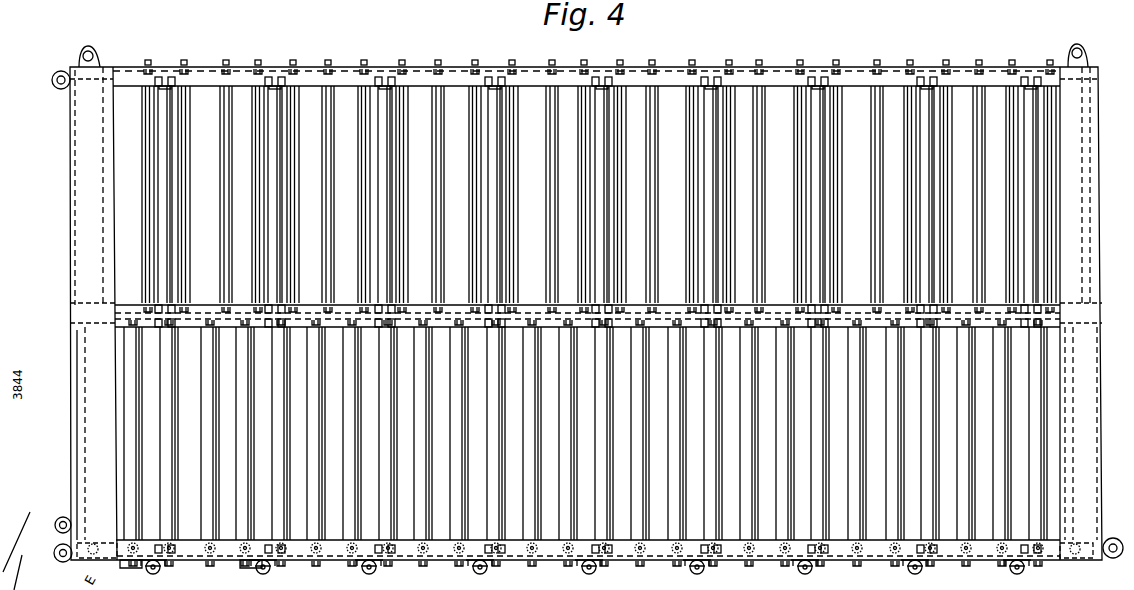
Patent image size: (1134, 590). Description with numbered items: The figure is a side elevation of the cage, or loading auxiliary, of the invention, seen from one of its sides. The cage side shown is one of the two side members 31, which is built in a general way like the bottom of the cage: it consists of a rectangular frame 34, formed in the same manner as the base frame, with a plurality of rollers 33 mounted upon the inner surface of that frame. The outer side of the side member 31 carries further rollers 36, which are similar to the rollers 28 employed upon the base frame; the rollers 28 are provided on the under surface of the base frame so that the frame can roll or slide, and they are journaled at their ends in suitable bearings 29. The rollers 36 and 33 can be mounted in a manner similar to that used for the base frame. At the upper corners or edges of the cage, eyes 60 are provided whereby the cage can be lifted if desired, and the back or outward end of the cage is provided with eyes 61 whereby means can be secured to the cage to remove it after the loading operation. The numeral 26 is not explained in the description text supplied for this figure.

The side member 31 is at (674, 70).
The rectangular frame 34 is at (201, 78).
The rollers 33 is at (215, 189).
The rollers 36 is at (275, 226).
The lower rollers 26 is at (155, 568).
The bearings 29 is at (280, 568).
The rollers 28 is at (228, 589).
The eyes 60 is at (96, 48).
The eyes 61 is at (60, 516).